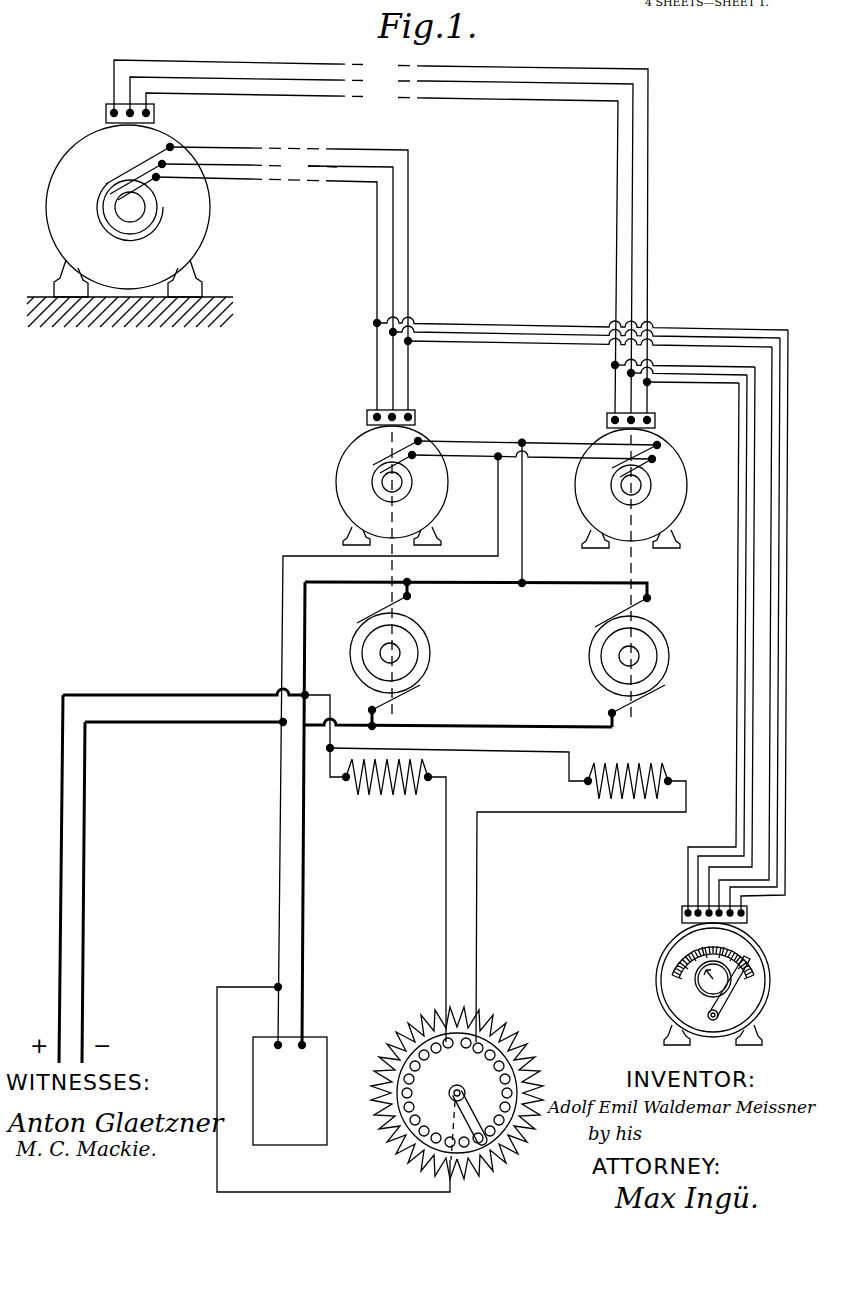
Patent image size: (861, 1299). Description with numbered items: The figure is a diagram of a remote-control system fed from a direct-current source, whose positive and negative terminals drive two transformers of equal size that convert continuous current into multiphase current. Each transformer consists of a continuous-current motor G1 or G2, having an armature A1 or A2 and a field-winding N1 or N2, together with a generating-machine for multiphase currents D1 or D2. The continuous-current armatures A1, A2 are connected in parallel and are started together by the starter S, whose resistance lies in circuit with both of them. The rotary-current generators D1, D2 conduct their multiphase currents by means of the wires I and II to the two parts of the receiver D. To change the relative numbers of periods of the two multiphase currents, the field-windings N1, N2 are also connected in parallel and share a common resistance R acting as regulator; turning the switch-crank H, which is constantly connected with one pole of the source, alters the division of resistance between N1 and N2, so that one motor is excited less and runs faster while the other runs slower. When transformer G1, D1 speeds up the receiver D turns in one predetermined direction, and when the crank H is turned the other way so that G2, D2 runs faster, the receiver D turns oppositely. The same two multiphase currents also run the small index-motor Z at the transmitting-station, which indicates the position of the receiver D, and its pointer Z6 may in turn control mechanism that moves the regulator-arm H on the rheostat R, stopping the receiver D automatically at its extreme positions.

The receiver D is at (87, 150).
The wires I is at (282, 278).
The wires II is at (381, 236).
The generating-machine for multiphase currents D1 is at (362, 448).
The generating-machine for multiphase currents D2 is at (674, 482).
The armature A1 is at (423, 642).
The armature A2 is at (663, 643).
The field-winding N1 is at (423, 772).
The field-winding N2 is at (665, 772).
The motor for continuous current G1 is at (388, 841).
The motor for continuous current G2 is at (633, 846).
The starter S is at (290, 1091).
The resistance (regulator, rheostat) R is at (457, 1093).
The switch-crank (regulator-arm) H is at (493, 1102).
The index-motor (indicator) Z is at (713, 975).
The pointer Z6 is at (720, 998).